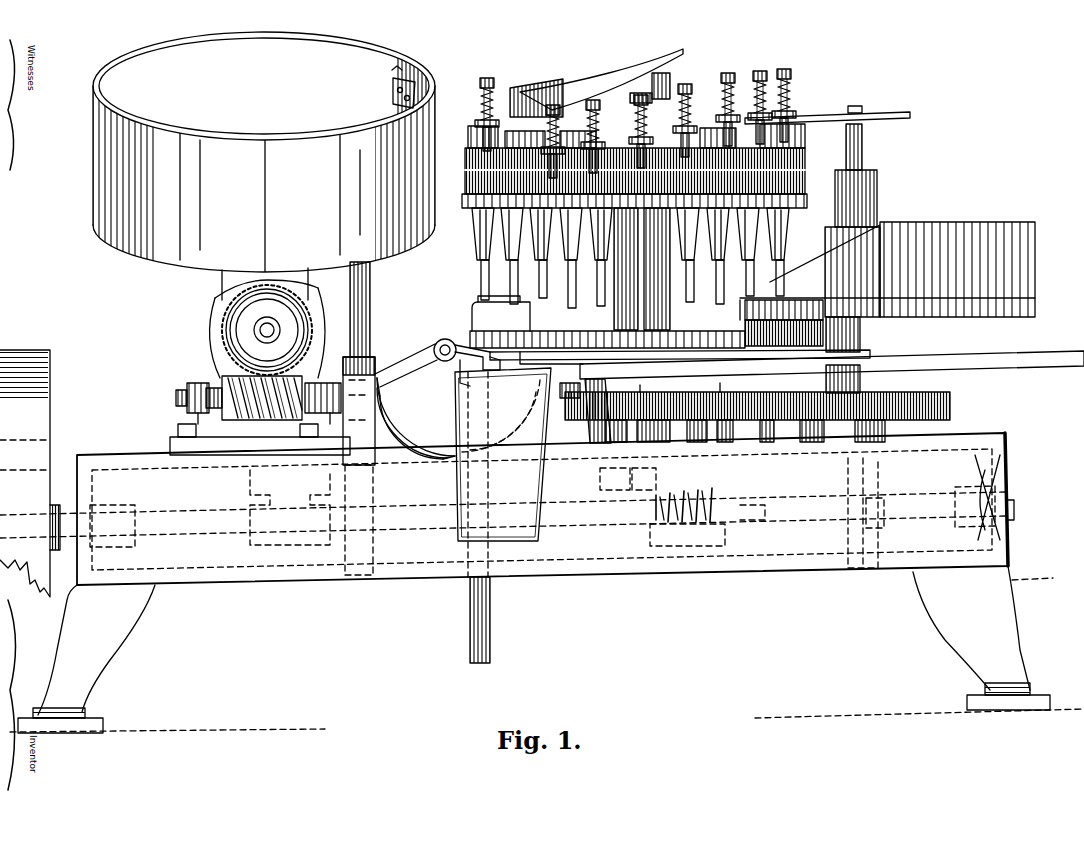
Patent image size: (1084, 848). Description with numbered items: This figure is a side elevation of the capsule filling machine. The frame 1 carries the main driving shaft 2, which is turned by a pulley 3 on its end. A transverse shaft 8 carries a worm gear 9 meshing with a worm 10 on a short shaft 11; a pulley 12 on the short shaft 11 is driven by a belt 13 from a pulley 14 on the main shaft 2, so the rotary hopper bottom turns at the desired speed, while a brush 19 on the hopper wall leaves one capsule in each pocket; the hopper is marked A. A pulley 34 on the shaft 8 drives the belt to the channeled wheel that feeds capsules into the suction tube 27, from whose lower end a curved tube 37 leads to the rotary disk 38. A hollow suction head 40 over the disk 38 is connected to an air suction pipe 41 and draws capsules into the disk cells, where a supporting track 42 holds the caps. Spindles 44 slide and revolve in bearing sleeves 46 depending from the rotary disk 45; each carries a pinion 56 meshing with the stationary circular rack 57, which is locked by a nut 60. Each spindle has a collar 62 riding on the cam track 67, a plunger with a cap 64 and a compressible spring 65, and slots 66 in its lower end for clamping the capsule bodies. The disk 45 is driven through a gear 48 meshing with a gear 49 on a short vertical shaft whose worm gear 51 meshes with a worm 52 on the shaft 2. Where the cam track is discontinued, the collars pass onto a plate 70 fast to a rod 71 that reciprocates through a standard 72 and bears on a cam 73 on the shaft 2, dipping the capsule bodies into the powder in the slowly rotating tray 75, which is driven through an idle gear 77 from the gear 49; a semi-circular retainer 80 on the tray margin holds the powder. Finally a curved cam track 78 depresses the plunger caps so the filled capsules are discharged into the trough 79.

The drum A is at (128, 60).
The frame 1 is at (1005, 463).
The main driving shaft 2 is at (828, 522).
The pulley 3 is at (50, 402).
The transverse shaft 8 is at (262, 330).
The worm gear 9 is at (228, 344).
The worm 10 is at (248, 416).
The short shaft 11 is at (176, 397).
The pulley 12 is at (374, 364).
The belt 13 is at (364, 440).
The pulley 14 is at (346, 582).
The brush 19 is at (392, 99).
The suction tube 27 is at (371, 283).
The pulley 34 is at (215, 316).
The curved tube 37 is at (437, 399).
The rotary disk 38 is at (780, 330).
The suction head 40 is at (488, 310).
The air suction pipe 41 is at (468, 611).
The supporting track 42 is at (573, 358).
The spindles 44 is at (481, 276).
The rotary disk 45 is at (478, 199).
The bearing sleeves 46 is at (480, 240).
The gear 48 is at (600, 443).
The gear 49 is at (752, 430).
The worm gear 51 is at (765, 522).
The worm 52 is at (662, 520).
The pinion 56 is at (478, 165).
The circular rack 57 is at (612, 150).
The nut 60 is at (672, 73).
The collar 62 is at (476, 126).
The cap 64 is at (489, 78).
The compressible spring 65 is at (481, 100).
The slots 66 is at (612, 311).
The cam track 67 is at (676, 140).
The plate 70 is at (890, 118).
The rod 71 is at (863, 150).
The standard 72 is at (878, 190).
The cam 73 is at (880, 545).
The tray 75 is at (905, 312).
The idle gear 77 is at (762, 430).
The curved cam track 78 is at (612, 72).
The trough 79 is at (495, 482).
The semi-circular retainer 80 is at (902, 254).